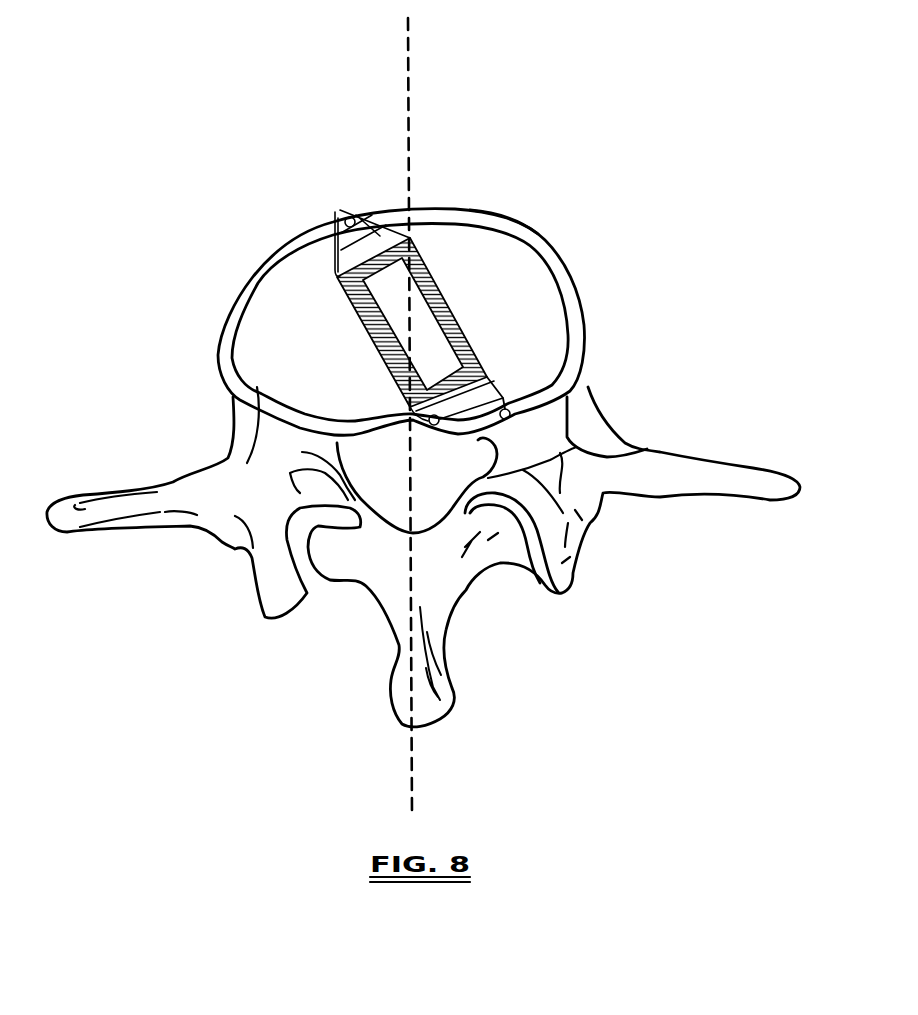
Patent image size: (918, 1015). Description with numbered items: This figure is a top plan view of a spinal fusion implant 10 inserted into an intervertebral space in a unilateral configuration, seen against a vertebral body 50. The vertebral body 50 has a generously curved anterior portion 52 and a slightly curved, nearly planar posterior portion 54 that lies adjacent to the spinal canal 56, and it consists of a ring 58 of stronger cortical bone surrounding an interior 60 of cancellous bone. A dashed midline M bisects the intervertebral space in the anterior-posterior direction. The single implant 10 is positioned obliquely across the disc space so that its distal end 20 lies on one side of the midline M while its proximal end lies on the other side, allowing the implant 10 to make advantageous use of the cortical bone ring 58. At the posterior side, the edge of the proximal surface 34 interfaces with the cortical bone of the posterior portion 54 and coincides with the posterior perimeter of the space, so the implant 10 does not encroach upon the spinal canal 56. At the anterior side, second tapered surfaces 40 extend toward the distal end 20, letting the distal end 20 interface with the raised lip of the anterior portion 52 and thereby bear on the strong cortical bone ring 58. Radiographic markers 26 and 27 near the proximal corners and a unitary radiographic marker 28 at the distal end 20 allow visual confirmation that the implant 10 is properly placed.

The spinal fusion implant 10 is at (404, 289).
The distal (anterior) end 20 is at (347, 218).
The radiographic markers 26 is at (503, 407).
The radiographic markers 27 is at (405, 413).
The radiographic marker 28 is at (336, 229).
The proximal surface 34 is at (481, 439).
The second tapered surfaces 40 is at (375, 240).
The vertebral body 50 is at (577, 341).
The anterior portion 52 is at (482, 210).
The posterior portion 54 is at (262, 402).
The spinal canal 56 is at (393, 472).
The ring 58 is at (550, 258).
The interior 60 is at (528, 316).
The midline M is at (413, 63).